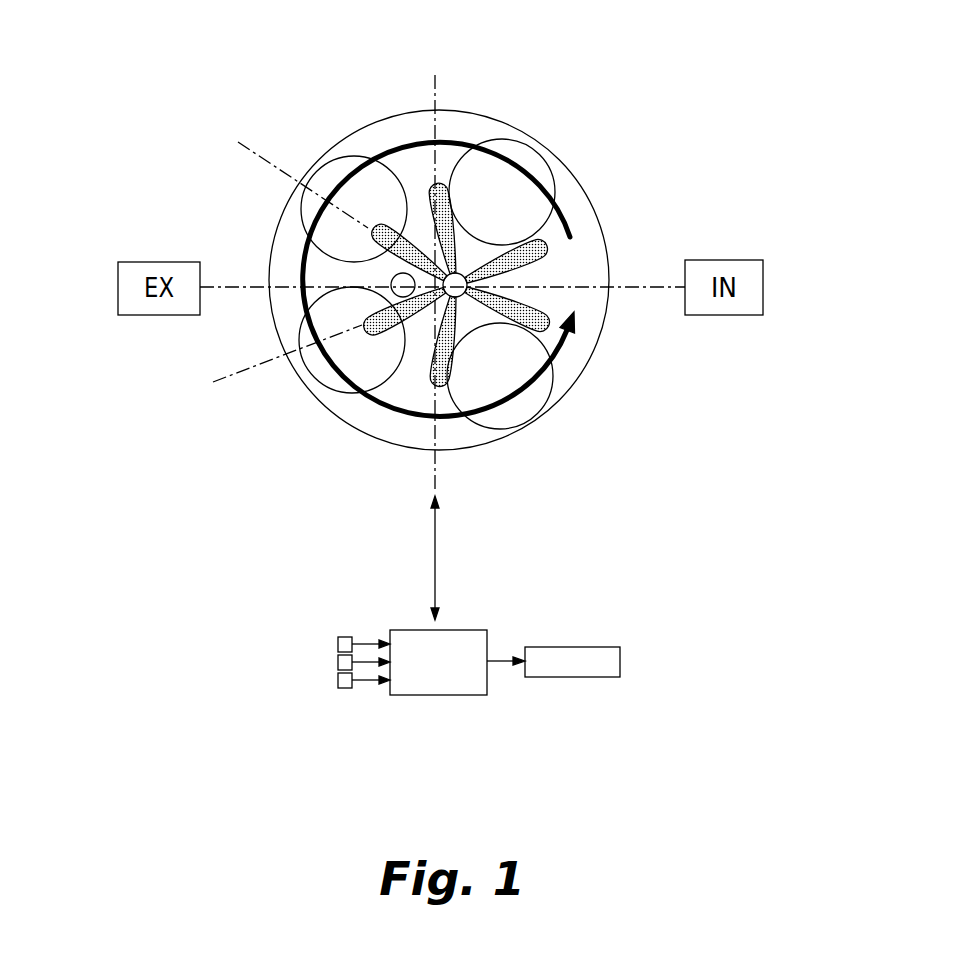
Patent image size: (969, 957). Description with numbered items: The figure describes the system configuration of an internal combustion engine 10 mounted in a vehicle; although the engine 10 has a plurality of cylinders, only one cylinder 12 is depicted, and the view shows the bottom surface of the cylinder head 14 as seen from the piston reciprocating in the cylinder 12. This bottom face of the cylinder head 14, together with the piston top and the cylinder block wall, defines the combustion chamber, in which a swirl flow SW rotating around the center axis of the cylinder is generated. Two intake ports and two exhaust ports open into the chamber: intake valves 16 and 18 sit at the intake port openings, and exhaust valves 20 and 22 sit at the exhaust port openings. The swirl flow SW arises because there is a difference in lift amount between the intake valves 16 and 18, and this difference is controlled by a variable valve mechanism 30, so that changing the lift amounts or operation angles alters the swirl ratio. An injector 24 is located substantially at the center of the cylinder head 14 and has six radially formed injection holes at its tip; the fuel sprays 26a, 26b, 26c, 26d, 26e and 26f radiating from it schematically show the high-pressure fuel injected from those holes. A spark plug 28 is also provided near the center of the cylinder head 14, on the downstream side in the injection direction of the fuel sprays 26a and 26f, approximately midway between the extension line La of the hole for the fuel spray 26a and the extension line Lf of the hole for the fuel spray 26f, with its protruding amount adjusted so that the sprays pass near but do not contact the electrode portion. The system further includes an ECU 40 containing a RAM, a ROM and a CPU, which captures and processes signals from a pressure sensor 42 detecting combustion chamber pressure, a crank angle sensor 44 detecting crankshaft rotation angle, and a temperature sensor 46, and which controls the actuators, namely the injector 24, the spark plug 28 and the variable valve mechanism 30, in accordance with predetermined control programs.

The internal combustion engine 10 is at (612, 171).
The cylinder 12 is at (573, 388).
The cylinder head 14 is at (592, 248).
The intake valve 16 is at (520, 407).
The intake valve 18 is at (520, 150).
The exhaust valve 20 is at (335, 383).
The exhaust valve 22 is at (312, 204).
The injector 24 is at (466, 265).
The fuel spray 26a is at (362, 340).
The fuel spray 26b is at (425, 395).
The fuel spray 26c is at (537, 301).
The fuel spray 26d is at (556, 250).
The fuel spray 26e is at (439, 184).
The fuel spray 26f is at (373, 226).
The spark plug 28 is at (379, 228).
The variable valve mechanism 30 is at (595, 647).
The ECU 40 is at (465, 630).
The pressure sensor 42 is at (338, 642).
The crank angle sensor 44 is at (338, 665).
The temperature sensor 46 is at (338, 679).
The swirl flow SW is at (583, 185).
The extension line Lf is at (285, 174).
The extension line La is at (272, 362).